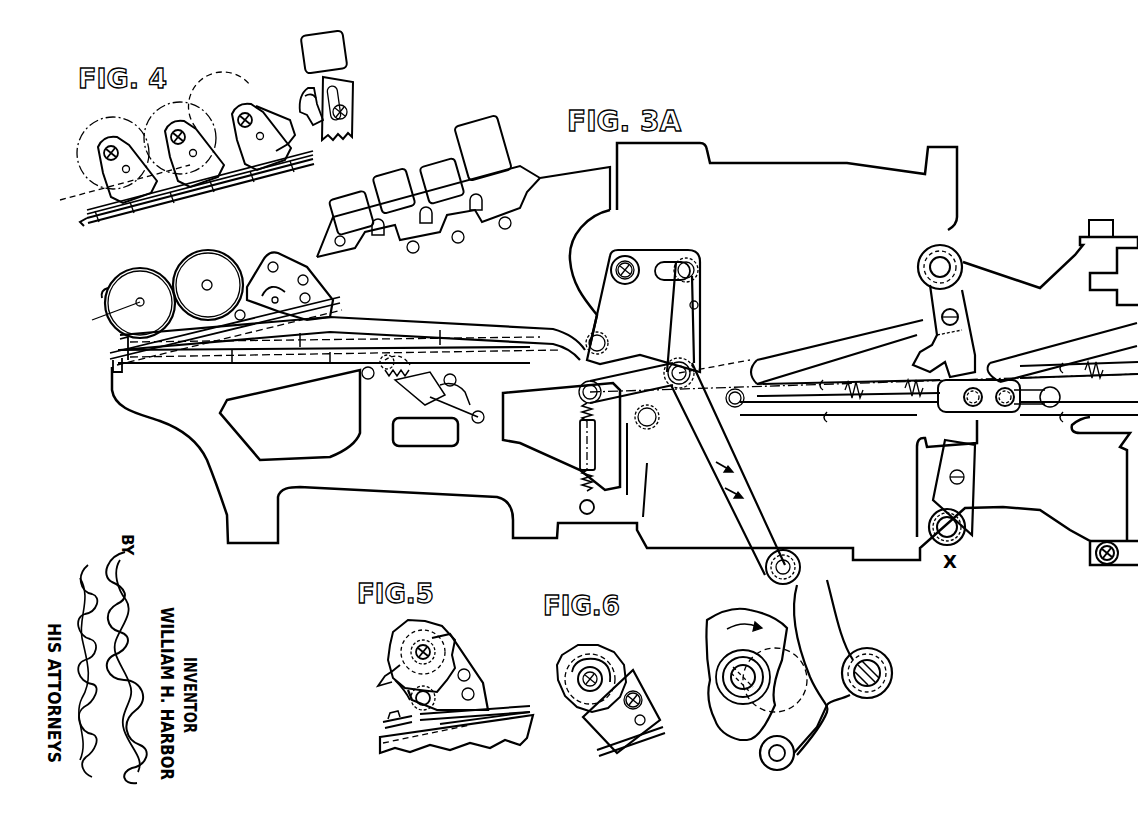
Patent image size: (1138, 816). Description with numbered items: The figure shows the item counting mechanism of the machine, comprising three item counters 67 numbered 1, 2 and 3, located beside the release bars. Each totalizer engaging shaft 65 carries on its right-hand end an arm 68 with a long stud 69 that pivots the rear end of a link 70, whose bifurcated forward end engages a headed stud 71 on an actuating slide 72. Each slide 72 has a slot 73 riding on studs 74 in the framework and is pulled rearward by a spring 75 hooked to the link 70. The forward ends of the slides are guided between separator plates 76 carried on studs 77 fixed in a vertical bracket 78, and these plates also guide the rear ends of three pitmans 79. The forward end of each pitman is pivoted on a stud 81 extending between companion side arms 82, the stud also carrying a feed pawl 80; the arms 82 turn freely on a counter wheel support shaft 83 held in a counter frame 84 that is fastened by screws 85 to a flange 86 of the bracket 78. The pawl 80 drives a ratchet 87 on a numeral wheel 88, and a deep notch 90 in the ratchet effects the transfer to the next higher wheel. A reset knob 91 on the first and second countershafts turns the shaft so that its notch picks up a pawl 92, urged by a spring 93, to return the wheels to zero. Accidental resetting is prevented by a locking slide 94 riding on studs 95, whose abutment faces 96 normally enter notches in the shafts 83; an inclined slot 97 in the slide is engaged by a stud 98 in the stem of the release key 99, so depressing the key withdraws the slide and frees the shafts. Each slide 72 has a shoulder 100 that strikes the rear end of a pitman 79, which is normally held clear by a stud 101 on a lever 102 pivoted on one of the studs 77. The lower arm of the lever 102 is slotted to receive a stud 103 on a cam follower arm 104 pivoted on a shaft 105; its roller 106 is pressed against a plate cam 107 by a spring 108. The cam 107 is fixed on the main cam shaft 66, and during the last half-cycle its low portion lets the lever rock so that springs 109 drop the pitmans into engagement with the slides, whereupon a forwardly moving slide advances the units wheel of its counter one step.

In FIG. 4, the No. 1 item counter 1 is at (117, 150).
In FIG. 4, the No. 2 item counter 2 is at (184, 134).
In FIG. 4, the No. 3 item counter 3 is at (261, 119).
In FIG. 3A, the totalizer engaging shaft 65 is at (928, 267).
In FIG. 3A, the main cam shaft 66 is at (738, 683).
In FIG. 3A, the item counter 67 is at (152, 262).
In FIG. 5, the item counter 67 is at (405, 617).
In FIG. 6, the item counter 67 is at (590, 637).
In FIG. 3A, the arm 68 is at (928, 294).
In FIG. 3A, the long stud 69 is at (960, 317).
In FIG. 3A, the link 70 is at (885, 343).
In FIG. 3A, the headed stud 71 is at (740, 410).
In FIG. 3A, the actuating slide 72 is at (910, 415).
In FIG. 3A, the slot 73 is at (1062, 397).
In FIG. 3A, the stud 74 is at (1005, 407).
In FIG. 3A, the spring 75 is at (880, 390).
In FIG. 3A, the separator plate 76 is at (603, 312).
In FIG. 3A, the stud 77 is at (604, 346).
In FIG. 3A, the vertical bracket 78 is at (190, 430).
In FIG. 5, the vertical bracket 78 is at (440, 745).
In FIG. 3A, the pitman 79 is at (465, 335).
In FIG. 5, the pitman 79 is at (500, 740).
In FIG. 5, the item counter feed pawl 80 is at (415, 702).
In FIG. 3A, the stud 81 is at (283, 303).
In FIG. 5, the stud 81 is at (470, 690).
In FIG. 5, the companion side arm 82 is at (398, 698).
In FIG. 4, the counter wheel support shaft 83 is at (160, 145).
In FIG. 3A, the counter wheel support shaft 83 is at (103, 319).
In FIG. 5, the counter wheel support shaft 83 is at (430, 648).
In FIG. 6, the counter wheel support shaft 83 is at (585, 668).
In FIG. 4, the counter frame 84 is at (97, 222).
In FIG. 3A, the counter frame 84 is at (137, 358).
In FIG. 5, the counter frame 84 is at (500, 708).
In FIG. 6, the counter frame 84 is at (640, 740).
In FIG. 4, the screw 85 is at (305, 152).
In FIG. 3A, the screw 85 is at (112, 352).
In FIG. 5, the screw 85 is at (385, 727).
In FIG. 4, the flange 86 is at (205, 185).
In FIG. 3A, the flange 86 is at (110, 372).
In FIG. 5, the flange 86 is at (400, 755).
In FIG. 5, the ratchet 87 is at (400, 652).
In FIG. 5, the numeral wheel 88 is at (395, 632).
In FIG. 6, the numeral wheel 88 is at (615, 658).
In FIG. 5, the deep notch 90 is at (385, 670).
In FIG. 3A, the reset knob 91 is at (222, 265).
In FIG. 6, the pawl 92 is at (595, 715).
In FIG. 6, the spring 93 is at (612, 672).
In FIG. 4, the locking slide 94 is at (290, 118).
In FIG. 4, the stud 95 is at (121, 185).
In FIG. 4, the abutment face 96 is at (219, 94).
In FIG. 4, the inclined slot 97 is at (351, 94).
In FIG. 4, the stud 98 is at (330, 80).
In FIG. 4, the release key 99 is at (340, 46).
In FIG. 3A, the release key 99 is at (333, 200).
In FIG. 3A, the shoulder 100 is at (690, 369).
In FIG. 3A, the stud 101 is at (580, 395).
In FIG. 3A, the lever 102 is at (724, 468).
In FIG. 3A, the stud 103 is at (800, 575).
In FIG. 3A, the cam follower arm 104 is at (827, 603).
In FIG. 3A, the shaft 105 is at (873, 666).
In FIG. 3A, the roller 106 is at (760, 757).
In FIG. 3A, the plate cam 107 is at (745, 645).
In FIG. 3A, the spring 108 is at (582, 420).
In FIG. 3A, the spring 109 is at (415, 392).